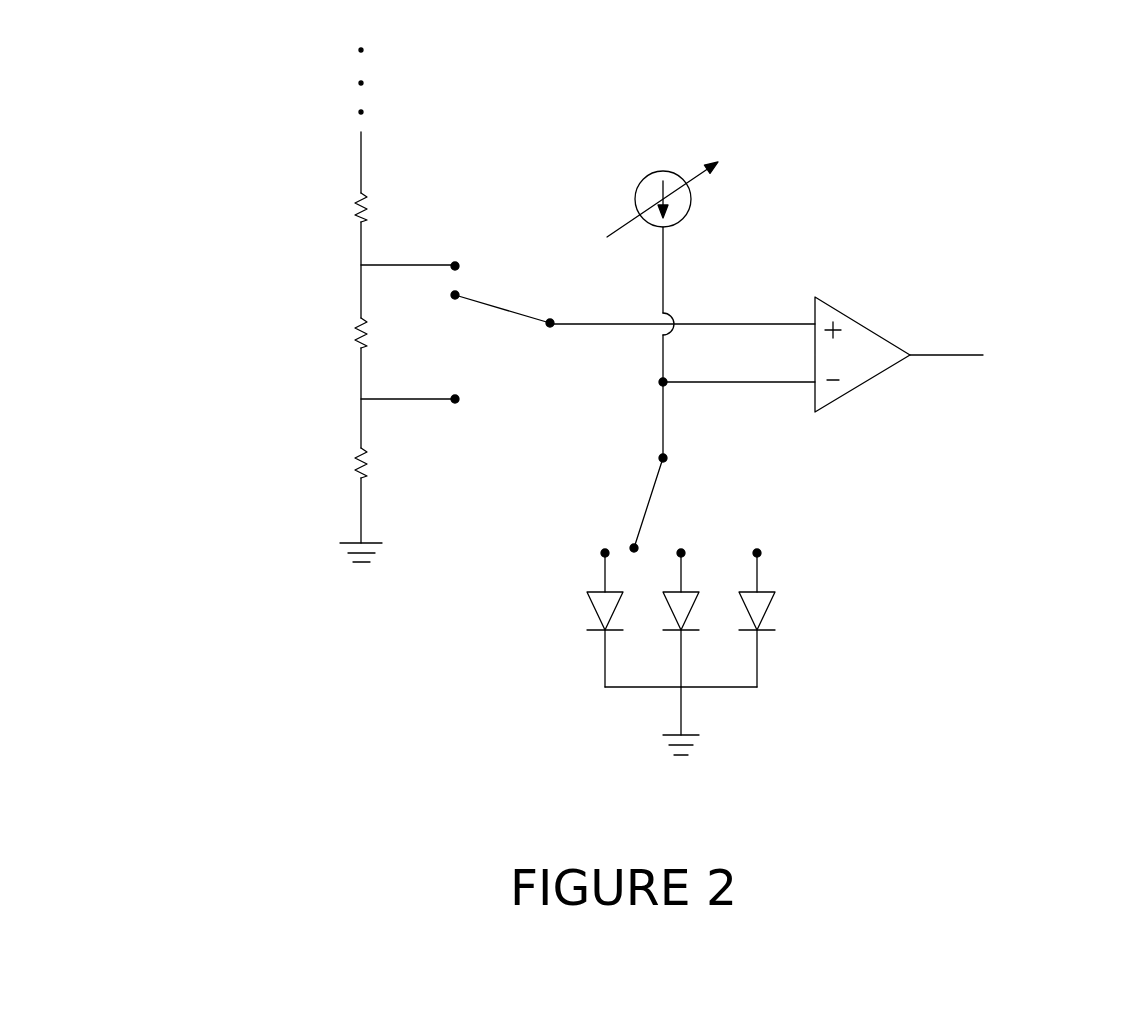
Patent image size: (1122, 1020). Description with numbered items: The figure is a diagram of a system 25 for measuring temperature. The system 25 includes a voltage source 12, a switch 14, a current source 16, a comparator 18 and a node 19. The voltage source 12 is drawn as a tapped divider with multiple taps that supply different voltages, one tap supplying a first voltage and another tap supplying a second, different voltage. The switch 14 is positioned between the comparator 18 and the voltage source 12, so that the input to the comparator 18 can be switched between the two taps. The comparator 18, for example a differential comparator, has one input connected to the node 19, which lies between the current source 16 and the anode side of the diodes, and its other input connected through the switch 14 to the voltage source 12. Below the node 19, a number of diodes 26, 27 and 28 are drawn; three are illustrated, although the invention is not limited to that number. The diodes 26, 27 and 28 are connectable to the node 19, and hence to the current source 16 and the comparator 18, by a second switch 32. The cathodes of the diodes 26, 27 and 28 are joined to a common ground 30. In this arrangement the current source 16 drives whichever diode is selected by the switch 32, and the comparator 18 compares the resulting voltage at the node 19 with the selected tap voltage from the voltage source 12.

The circuit 25 is at (180, 38).
The voltage source 12 is at (322, 376).
The switch 14 is at (508, 272).
The current source 16 is at (674, 132).
The comparator 18 is at (875, 397).
The node 19 is at (680, 395).
The switch 32 is at (638, 468).
The diode 26 is at (565, 606).
The diode 27 is at (599, 642).
The diode 28 is at (656, 629).
The common ground 30 is at (718, 750).